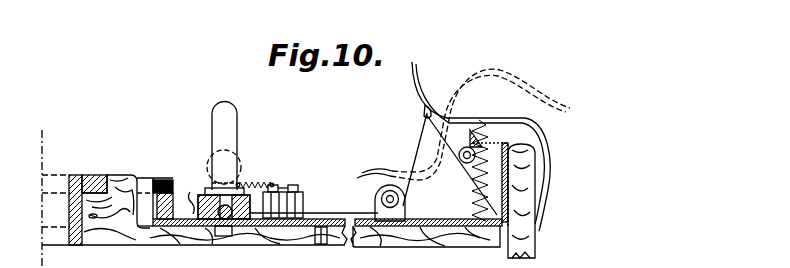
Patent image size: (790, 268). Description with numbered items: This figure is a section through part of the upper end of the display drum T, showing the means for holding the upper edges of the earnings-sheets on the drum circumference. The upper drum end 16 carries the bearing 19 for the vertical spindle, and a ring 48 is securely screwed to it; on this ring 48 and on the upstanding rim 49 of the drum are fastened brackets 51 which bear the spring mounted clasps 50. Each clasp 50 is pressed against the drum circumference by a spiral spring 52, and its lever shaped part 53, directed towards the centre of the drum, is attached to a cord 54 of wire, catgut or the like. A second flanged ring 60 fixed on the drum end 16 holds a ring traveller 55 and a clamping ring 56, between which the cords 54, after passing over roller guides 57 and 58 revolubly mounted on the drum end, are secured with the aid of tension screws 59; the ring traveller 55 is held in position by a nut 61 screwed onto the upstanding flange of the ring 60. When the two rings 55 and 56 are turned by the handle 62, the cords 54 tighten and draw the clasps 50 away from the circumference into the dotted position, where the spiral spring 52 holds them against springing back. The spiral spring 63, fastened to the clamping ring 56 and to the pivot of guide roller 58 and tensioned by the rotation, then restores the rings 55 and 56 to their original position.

The upper drum end 16 is at (232, 246).
The bearing 19 is at (92, 176).
The ring 48 is at (424, 230).
The upstanding rim 49 is at (518, 167).
The spring mounted clasp 50 is at (415, 69).
The bracket 51 is at (486, 190).
The spiral spring 52 is at (479, 140).
The lever shaped part 53 is at (424, 110).
The cord 54 is at (416, 156).
The ring traveller 55 is at (207, 223).
The clamping ring 56 is at (202, 196).
The roller guide 57 is at (405, 199).
The roller guide 58 is at (302, 207).
The tension screw 59 is at (241, 165).
The flanged ring 60 is at (150, 230).
The nut 61 is at (162, 180).
The handle 62 is at (225, 108).
The spiral spring 63 is at (255, 184).
The display drum T is at (528, 251).